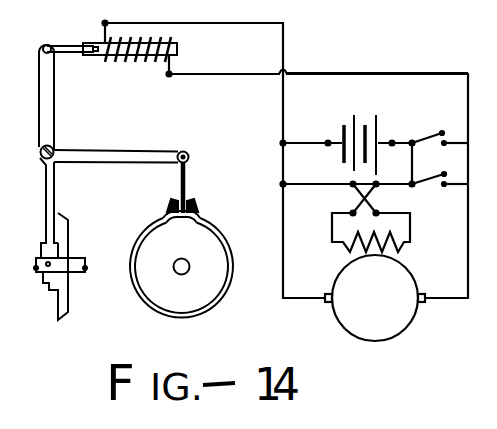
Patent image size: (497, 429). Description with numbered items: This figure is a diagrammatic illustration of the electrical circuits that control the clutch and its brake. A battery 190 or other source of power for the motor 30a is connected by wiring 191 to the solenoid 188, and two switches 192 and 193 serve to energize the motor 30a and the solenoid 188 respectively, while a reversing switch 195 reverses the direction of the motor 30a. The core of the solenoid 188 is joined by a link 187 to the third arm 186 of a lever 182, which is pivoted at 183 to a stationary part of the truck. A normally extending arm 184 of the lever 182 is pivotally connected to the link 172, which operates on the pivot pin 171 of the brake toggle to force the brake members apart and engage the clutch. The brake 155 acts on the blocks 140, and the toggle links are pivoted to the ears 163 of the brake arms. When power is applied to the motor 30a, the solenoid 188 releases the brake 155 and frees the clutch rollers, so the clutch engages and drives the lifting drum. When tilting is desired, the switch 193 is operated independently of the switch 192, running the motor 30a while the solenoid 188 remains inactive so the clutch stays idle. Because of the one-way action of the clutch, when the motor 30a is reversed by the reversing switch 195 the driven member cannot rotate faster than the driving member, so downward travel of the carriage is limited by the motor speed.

The blocks 140 is at (286, 149).
The brake 155 is at (155, 228).
The ears 163 is at (168, 207).
The pivot pin 171 is at (189, 200).
The link 172 is at (188, 178).
The lever 182 is at (50, 193).
The pivot 183 is at (57, 148).
The arm 184 is at (153, 155).
The third arm 186 is at (48, 98).
The link 187 is at (65, 43).
The solenoid 188 is at (163, 42).
The battery 190 is at (392, 108).
The wiring 191 is at (416, 73).
The switch 192 is at (438, 133).
The switch 193 is at (375, 171).
The reversing switch 195 is at (360, 195).
The motor 30a is at (375, 298).